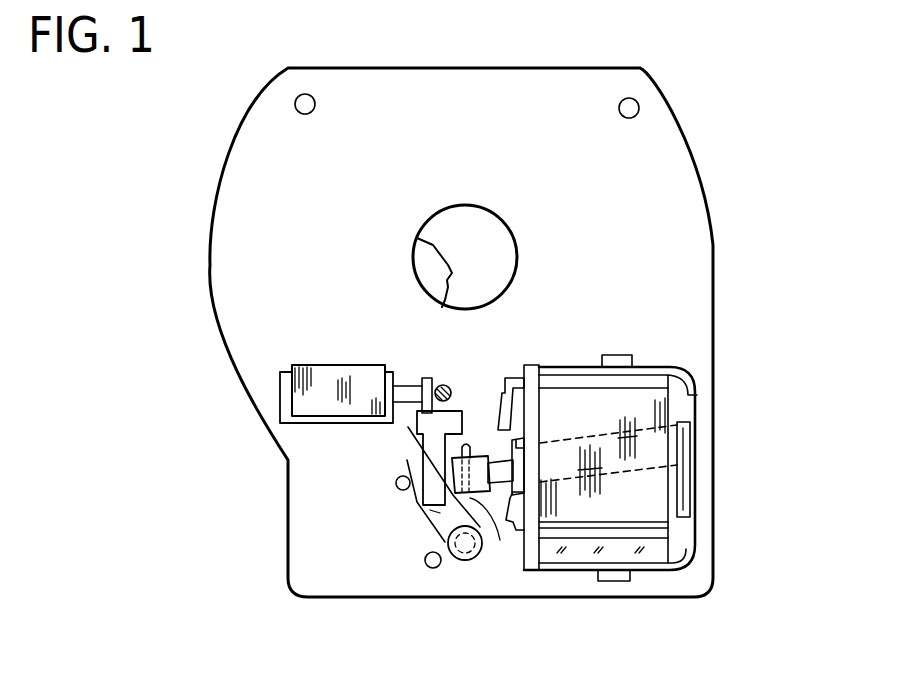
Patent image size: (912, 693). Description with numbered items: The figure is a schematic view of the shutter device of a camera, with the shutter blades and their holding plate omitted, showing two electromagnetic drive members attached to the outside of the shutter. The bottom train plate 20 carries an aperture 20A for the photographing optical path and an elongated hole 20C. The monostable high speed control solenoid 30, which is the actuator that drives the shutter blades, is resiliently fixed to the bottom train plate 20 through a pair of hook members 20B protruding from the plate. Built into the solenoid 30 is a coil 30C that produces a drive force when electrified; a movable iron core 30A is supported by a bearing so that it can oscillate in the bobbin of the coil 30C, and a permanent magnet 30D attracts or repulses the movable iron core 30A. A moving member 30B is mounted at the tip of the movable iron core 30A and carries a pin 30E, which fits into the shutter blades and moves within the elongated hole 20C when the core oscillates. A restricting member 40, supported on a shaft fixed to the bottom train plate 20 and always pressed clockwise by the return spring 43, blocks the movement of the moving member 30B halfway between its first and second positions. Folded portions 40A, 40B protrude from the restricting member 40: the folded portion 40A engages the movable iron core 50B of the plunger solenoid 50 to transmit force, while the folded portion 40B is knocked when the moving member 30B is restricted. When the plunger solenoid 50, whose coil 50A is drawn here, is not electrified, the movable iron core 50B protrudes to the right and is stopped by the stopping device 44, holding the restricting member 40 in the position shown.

The bottom train plate 20 is at (513, 67).
The aperture 20A is at (450, 206).
The hook members 20B is at (628, 355).
The elongated hole 20C is at (500, 547).
The monostable high speed control solenoid 30 is at (573, 577).
The movable iron core 30A is at (615, 477).
The moving member 30B is at (480, 450).
The coil 30C is at (608, 412).
The permanent magnet 30D is at (645, 553).
The pin 30E is at (462, 561).
The restricting member 40 is at (418, 530).
The folded portion 40A is at (408, 423).
The folded portion 40B is at (464, 443).
The return spring 43 is at (420, 510).
The stopping device 44 is at (447, 385).
The plunger solenoid 50 is at (307, 355).
The solenoid coil 50A is at (315, 389).
The movable iron core 50B is at (410, 386).